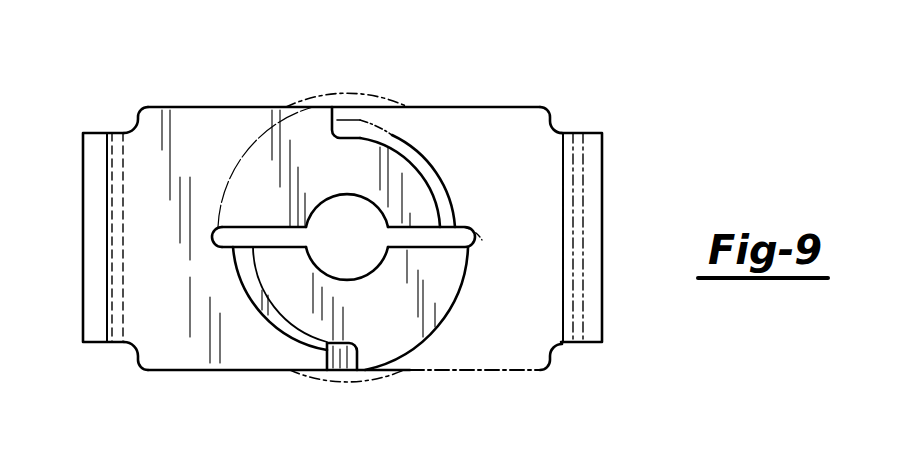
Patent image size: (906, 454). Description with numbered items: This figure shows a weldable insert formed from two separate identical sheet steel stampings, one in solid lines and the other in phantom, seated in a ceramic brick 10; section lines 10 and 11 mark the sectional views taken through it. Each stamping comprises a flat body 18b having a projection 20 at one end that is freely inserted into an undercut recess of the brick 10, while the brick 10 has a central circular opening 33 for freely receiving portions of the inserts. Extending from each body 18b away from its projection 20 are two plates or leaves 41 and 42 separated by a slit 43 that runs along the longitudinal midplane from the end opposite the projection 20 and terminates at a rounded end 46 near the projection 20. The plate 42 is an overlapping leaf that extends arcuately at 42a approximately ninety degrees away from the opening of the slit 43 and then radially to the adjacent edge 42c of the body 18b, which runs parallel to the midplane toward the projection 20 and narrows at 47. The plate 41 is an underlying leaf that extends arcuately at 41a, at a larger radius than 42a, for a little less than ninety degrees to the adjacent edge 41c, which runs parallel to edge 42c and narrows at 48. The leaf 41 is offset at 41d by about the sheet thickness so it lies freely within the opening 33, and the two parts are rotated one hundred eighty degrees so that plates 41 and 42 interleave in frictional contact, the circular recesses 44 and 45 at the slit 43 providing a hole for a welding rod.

The brick 10 is at (72, 253).
The section line 11- 11 is at (362, 63).
The flat body 18b is at (641, 146).
The projection 20 is at (82, 322).
The central circular opening 33 is at (302, 100).
The underlying leaf 41 is at (369, 339).
The arcuate portion of plate 41 41a is at (463, 297).
The adjacent edge of body 41c is at (248, 374).
The offset of leaf 41 41d is at (258, 310).
The overlapping leaf 42 is at (351, 139).
The arcuate portion of plate 42 42a is at (412, 157).
The adjacent edge of body 42c is at (234, 107).
The slit 43 is at (311, 270).
The central bore 44 is at (347, 237).
The upper bore edge 45 is at (329, 204).
The rounded end 46 is at (215, 248).
The narrowed portion 47 is at (136, 120).
The narrowed portion 48 is at (137, 358).